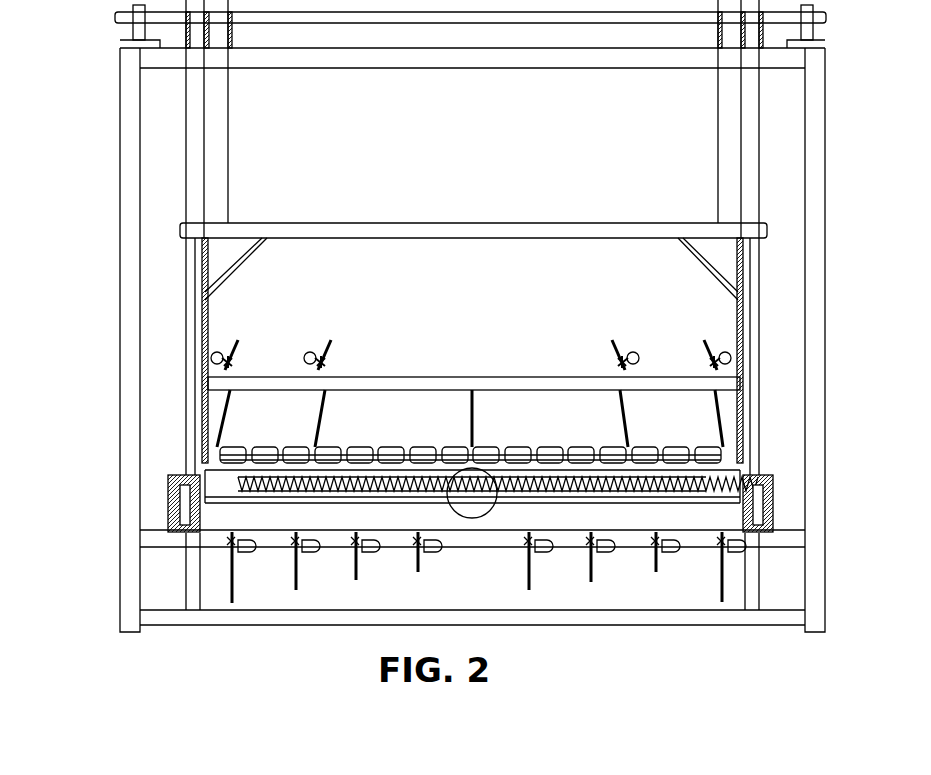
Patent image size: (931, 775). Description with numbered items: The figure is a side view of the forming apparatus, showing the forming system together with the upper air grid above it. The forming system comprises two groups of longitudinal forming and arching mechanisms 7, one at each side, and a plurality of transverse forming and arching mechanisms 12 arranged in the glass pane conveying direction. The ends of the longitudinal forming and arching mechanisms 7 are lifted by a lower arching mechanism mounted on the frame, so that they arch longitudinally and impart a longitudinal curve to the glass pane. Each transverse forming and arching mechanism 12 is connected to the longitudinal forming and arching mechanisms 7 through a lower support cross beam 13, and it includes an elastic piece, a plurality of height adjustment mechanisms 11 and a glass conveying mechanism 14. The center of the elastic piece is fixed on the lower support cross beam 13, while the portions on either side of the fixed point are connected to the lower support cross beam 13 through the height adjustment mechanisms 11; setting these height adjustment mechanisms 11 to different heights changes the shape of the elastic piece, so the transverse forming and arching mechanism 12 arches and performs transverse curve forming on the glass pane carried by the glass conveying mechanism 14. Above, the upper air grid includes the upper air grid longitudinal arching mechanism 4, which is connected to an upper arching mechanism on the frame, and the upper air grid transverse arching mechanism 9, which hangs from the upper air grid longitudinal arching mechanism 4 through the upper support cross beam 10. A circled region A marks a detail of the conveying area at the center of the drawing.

The upper air grid longitudinal arching mechanism 4 is at (197, 397).
The longitudinal forming and arching mechanism 7 is at (168, 479).
The upper air grid transverse arching mechanism 9 is at (215, 447).
The upper support cross beam 10 is at (205, 383).
The height adjustment mechanism 11 is at (215, 352).
The transverse forming and arching mechanism 12 is at (180, 512).
The lower support cross beam 13 is at (225, 522).
The glass conveying mechanism 14 is at (238, 482).
The detail region A is at (480, 517).